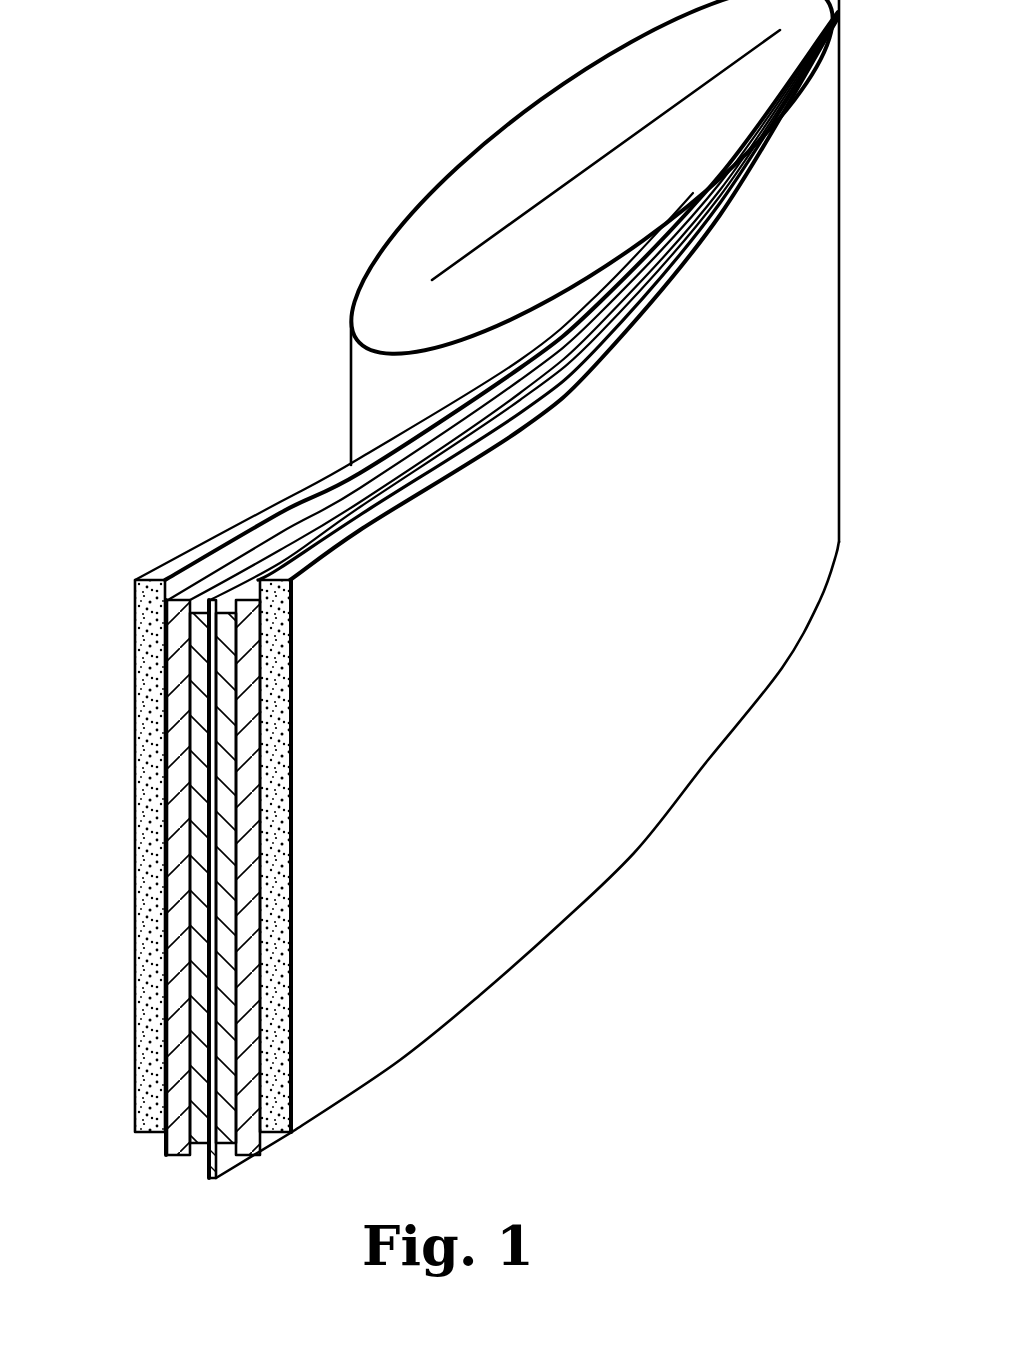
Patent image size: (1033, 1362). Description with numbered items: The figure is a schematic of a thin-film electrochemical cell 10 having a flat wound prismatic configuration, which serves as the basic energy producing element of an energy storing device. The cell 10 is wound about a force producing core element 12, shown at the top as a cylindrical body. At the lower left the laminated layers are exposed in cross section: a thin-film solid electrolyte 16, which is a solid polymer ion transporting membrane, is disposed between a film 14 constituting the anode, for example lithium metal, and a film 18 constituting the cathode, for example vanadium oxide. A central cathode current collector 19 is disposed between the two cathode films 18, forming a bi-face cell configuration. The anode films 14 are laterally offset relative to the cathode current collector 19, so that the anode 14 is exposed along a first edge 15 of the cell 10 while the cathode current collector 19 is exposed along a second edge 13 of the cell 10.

The electrochemical cell 10 is at (527, 703).
The force producing core element 12 is at (483, 240).
The second edge 13 is at (598, 888).
The anode film 14 is at (273, 593).
The first edge 15 is at (275, 515).
The thin-film solid electrolyte 16 is at (242, 750).
The cathode film 18 is at (223, 957).
The cathode current collector 19 is at (207, 1075).